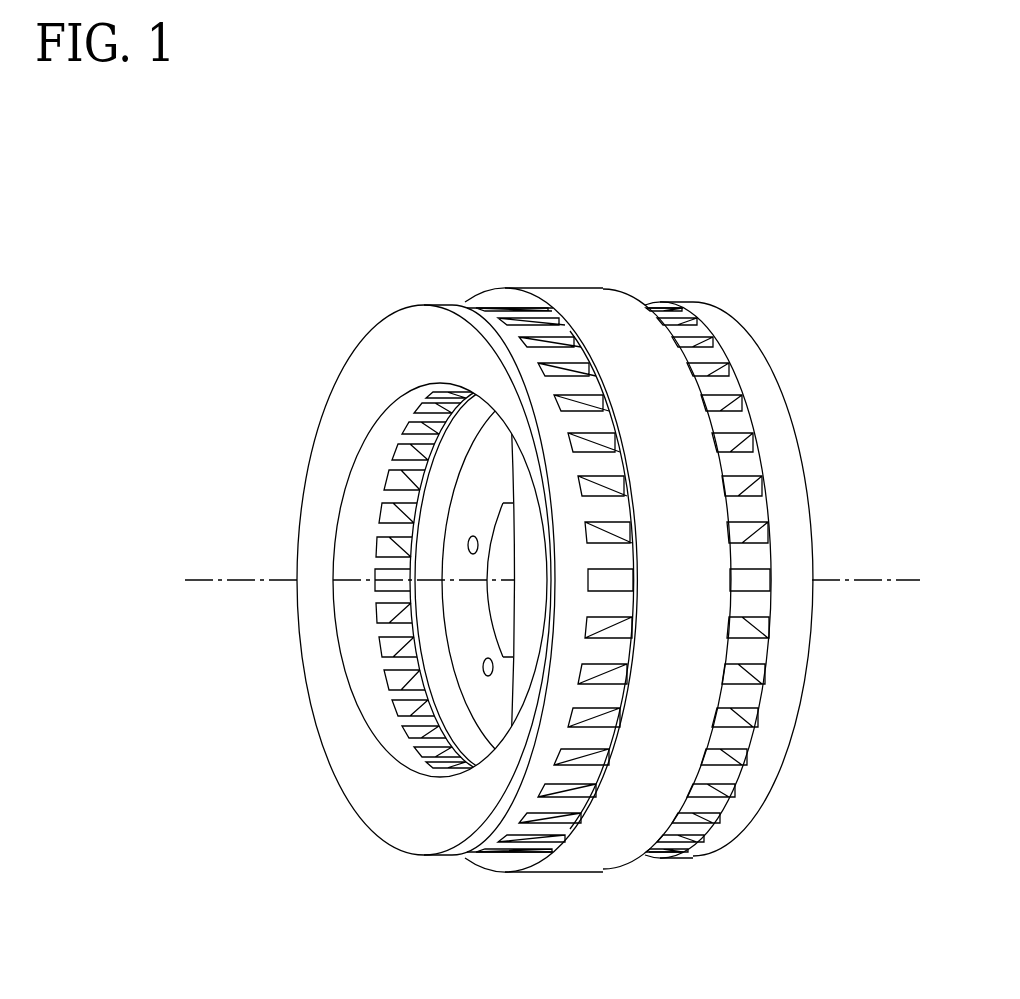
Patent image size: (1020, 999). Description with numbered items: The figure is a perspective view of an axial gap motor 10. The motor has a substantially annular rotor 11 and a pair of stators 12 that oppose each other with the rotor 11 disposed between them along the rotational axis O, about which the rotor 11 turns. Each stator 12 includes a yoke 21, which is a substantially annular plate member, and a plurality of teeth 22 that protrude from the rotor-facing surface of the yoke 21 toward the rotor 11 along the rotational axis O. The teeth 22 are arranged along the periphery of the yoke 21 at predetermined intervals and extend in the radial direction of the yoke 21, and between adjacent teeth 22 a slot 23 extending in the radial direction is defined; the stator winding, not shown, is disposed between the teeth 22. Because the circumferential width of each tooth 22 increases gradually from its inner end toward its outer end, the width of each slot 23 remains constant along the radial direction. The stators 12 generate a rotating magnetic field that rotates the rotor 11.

The axial gap motor 10 is at (782, 236).
The rotor 11 is at (564, 257).
The stator 12 is at (461, 257).
The yoke 21 is at (497, 835).
The teeth 22 is at (563, 803).
The slot 23 is at (573, 788).
The rotational axis O is at (205, 582).